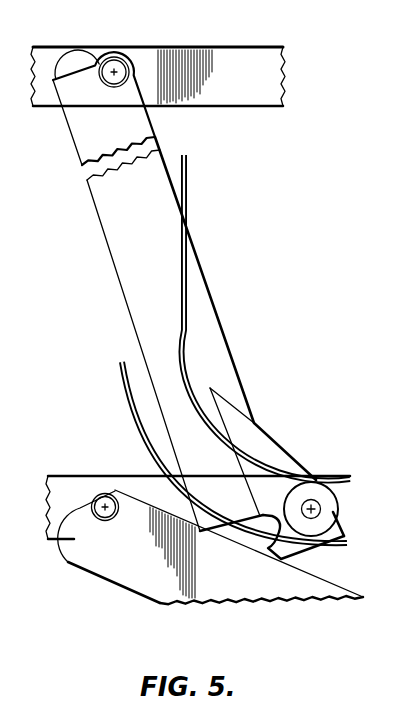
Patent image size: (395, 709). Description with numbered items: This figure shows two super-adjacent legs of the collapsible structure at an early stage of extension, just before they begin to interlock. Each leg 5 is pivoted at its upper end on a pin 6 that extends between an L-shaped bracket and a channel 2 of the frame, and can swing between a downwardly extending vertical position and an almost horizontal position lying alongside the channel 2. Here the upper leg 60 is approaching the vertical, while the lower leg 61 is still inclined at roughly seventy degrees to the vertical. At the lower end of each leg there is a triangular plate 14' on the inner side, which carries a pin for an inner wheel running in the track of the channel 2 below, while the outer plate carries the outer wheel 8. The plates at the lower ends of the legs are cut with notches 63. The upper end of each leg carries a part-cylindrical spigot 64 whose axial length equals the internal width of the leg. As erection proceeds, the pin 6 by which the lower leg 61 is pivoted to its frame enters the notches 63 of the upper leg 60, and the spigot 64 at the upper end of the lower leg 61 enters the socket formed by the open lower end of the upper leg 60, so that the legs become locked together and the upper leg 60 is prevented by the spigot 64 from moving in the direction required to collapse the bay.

The channel 2 is at (225, 57).
The leg 5 is at (166, 196).
The pin 6 is at (117, 62).
The outer wheel 8 is at (312, 490).
The triangular plate 14' is at (235, 308).
The upper leg 60 is at (130, 270).
The lower leg 61 is at (137, 512).
The notch 63 is at (272, 517).
The part-cylindrical spigot 64 is at (79, 57).